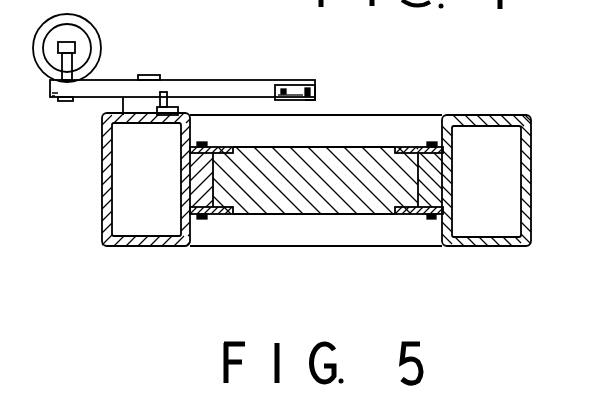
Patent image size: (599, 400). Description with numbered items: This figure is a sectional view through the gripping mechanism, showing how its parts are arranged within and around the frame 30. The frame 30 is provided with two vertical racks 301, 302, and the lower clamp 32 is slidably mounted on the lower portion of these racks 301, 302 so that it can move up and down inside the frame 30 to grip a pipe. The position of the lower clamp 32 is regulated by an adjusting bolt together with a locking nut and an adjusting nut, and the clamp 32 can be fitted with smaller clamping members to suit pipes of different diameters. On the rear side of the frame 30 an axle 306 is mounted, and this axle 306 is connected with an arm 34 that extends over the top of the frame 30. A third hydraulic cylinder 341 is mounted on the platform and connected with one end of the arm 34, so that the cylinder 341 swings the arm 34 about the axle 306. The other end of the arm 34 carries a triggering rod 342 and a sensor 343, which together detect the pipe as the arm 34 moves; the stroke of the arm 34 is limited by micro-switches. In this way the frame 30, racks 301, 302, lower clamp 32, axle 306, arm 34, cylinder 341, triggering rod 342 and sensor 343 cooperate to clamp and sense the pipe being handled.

The frame 30 is at (490, 115).
The lower clamp 32 is at (383, 150).
The vertical rack 301 is at (243, 214).
The vertical rack 302 is at (432, 158).
The arm 34 is at (236, 90).
The third hydraulic cylinder 341 is at (75, 25).
The triggering rod 342 is at (315, 100).
The sensor 343 is at (285, 85).
The axle 306 is at (155, 77).